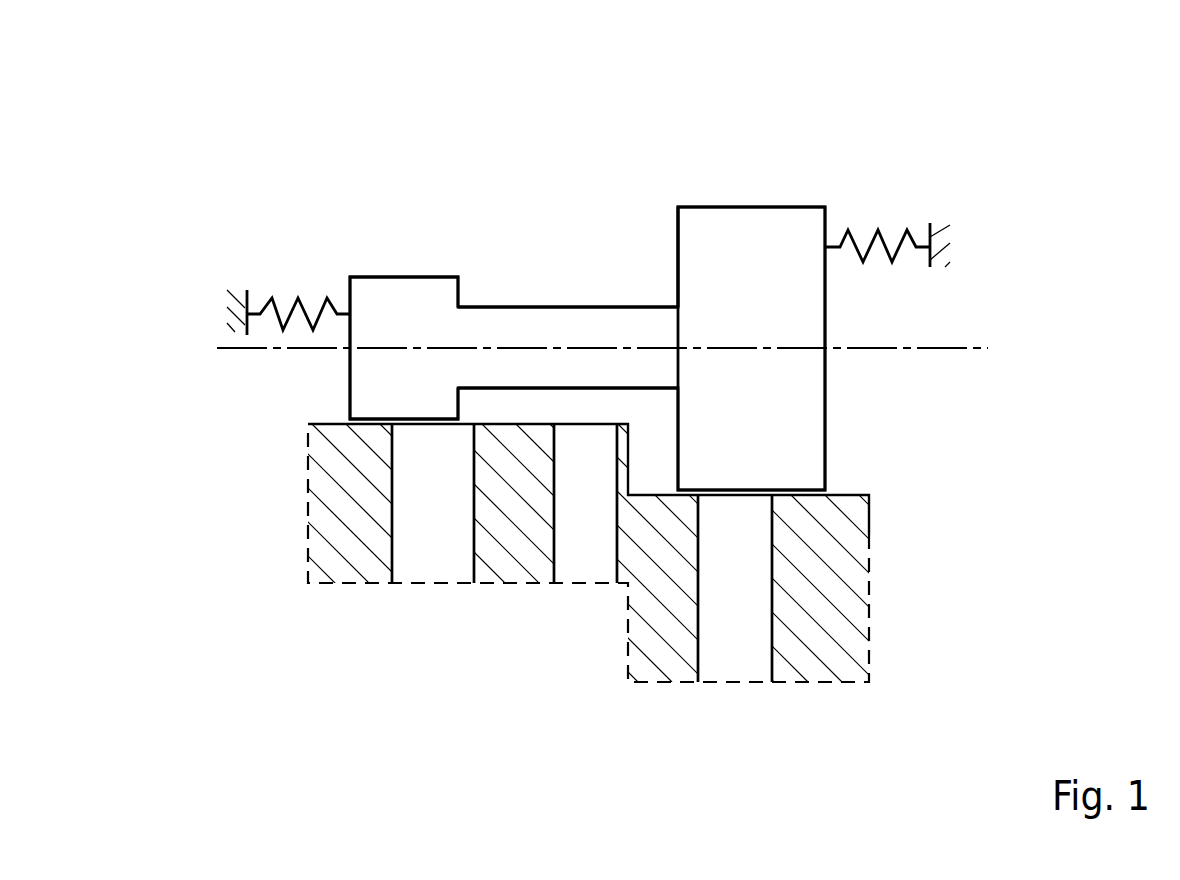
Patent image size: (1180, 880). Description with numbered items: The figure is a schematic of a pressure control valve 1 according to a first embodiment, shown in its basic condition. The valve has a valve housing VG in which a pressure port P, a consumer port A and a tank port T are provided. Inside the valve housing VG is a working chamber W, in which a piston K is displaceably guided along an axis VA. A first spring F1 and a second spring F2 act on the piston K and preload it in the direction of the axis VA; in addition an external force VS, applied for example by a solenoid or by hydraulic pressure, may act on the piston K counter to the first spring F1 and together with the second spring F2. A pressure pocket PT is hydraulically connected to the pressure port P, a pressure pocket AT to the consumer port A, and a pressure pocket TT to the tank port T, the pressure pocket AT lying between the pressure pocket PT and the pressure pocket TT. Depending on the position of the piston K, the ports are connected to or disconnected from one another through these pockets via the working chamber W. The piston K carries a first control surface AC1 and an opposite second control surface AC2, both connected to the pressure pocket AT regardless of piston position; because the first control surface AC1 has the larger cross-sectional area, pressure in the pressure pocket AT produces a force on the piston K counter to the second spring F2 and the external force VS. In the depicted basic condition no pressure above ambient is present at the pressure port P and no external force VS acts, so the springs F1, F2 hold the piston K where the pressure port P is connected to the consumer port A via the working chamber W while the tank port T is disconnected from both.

The pressure control valve 1 is at (1043, 168).
The valve housing VG is at (327, 557).
The external force VS is at (826, 417).
The axis VA is at (968, 348).
The piston K is at (767, 232).
The working chamber W is at (527, 408).
The first control surface AC1 is at (678, 240).
The second control surface AC2 is at (460, 295).
The first spring F1 is at (303, 278).
The second spring F2 is at (897, 200).
The pressure port P is at (431, 605).
The pressure pocket PT is at (426, 537).
The consumer port A is at (577, 598).
The pressure pocket AT is at (580, 541).
The tank port T is at (732, 695).
The pressure pocket TT is at (743, 639).